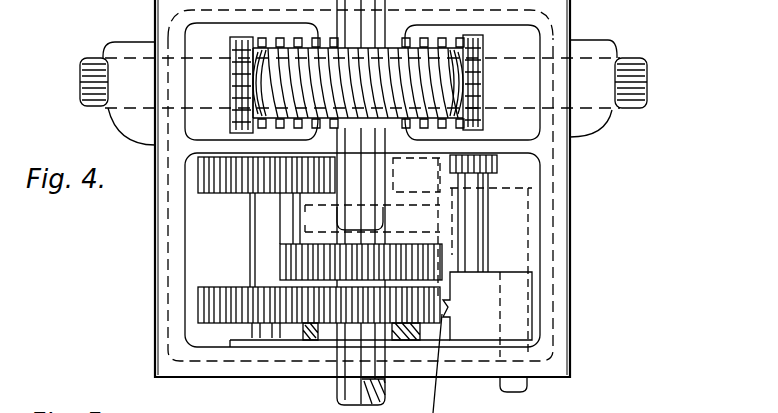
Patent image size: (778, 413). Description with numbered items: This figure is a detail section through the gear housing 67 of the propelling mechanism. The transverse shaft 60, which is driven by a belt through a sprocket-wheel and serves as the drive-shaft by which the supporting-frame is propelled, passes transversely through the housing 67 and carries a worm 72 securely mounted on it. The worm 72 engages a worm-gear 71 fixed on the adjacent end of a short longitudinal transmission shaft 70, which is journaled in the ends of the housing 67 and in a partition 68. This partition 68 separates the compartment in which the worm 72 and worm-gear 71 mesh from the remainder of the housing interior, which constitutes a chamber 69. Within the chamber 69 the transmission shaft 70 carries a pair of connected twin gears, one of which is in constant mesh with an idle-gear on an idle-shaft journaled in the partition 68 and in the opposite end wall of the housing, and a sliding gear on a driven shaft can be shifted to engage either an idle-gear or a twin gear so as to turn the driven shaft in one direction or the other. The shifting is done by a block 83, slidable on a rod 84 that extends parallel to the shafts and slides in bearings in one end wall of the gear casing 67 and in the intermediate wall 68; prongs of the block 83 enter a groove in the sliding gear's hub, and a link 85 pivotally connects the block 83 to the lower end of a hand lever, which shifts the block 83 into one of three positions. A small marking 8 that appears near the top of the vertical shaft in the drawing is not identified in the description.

The transverse shaft 60 is at (632, 80).
The housing 67 is at (166, 188).
The partition 68 is at (204, 147).
The chamber 69 is at (218, 246).
The transmission shaft 70 is at (361, 202).
The worm-gear 71 is at (422, 86).
The worm 72 is at (485, 37).
The block 83 is at (515, 295).
The rod 84 is at (472, 210).
The link 85 is at (522, 388).
The shaft marking 8 is at (351, 10).